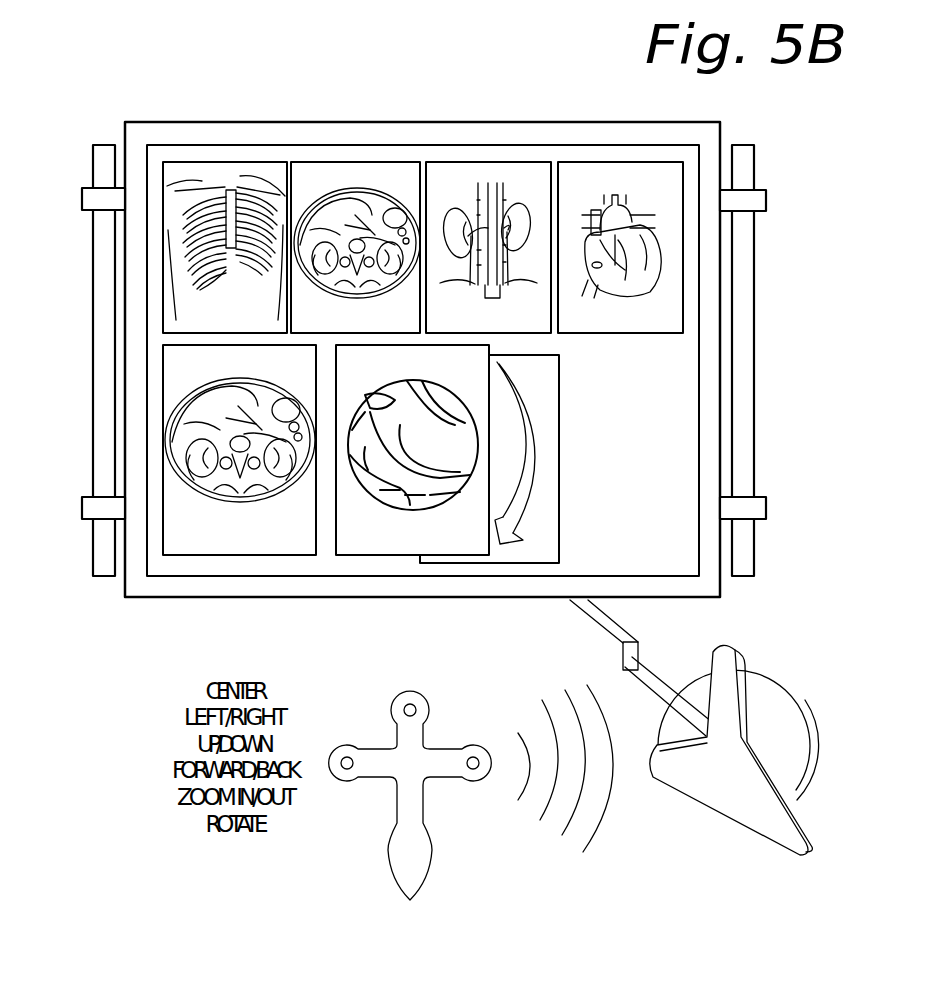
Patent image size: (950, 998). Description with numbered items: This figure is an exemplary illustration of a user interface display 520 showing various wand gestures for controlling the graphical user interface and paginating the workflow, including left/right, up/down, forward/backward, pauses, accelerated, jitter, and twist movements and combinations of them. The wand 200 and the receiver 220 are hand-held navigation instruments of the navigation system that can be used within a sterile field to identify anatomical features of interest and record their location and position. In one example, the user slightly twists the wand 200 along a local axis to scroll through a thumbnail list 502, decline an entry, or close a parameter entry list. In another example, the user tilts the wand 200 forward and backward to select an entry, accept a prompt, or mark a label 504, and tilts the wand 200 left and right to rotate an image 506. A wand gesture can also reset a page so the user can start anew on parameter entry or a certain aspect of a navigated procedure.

The display screen 520 is at (862, 134).
The thumbnail list 502 is at (340, 167).
The label 504 is at (163, 380).
The image 506 is at (543, 450).
The wand 200 is at (423, 792).
The receiver 220 is at (760, 718).